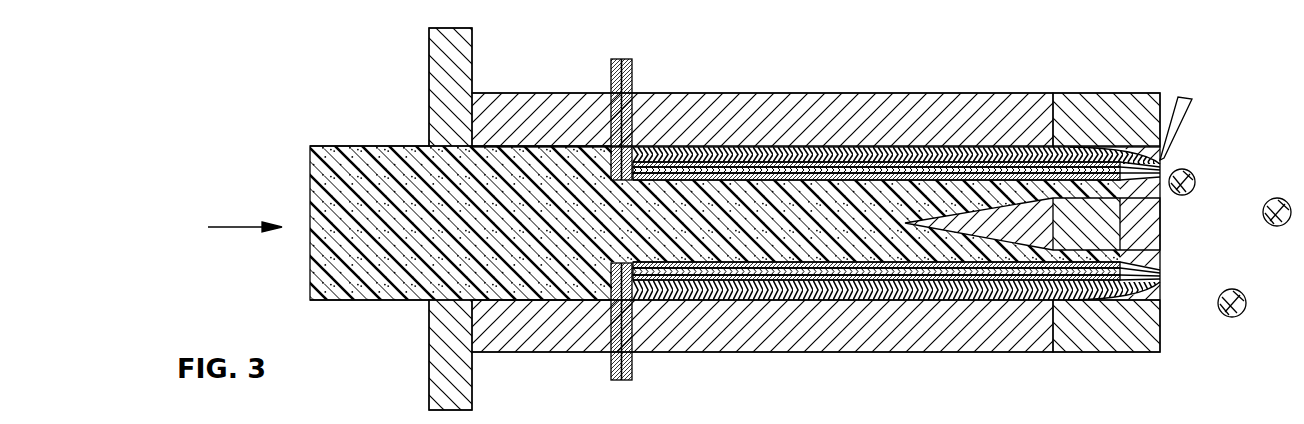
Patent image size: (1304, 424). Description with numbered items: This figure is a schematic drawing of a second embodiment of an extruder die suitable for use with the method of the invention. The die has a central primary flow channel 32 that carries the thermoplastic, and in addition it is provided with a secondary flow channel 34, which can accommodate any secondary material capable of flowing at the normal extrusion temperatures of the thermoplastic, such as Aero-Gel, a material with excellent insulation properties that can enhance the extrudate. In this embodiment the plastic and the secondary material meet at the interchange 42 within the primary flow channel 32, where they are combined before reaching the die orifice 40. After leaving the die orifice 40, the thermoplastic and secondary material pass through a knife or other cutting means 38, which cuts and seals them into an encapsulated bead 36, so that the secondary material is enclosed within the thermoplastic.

The central primary flow channel 32 is at (417, 262).
The secondary flow channel 34 is at (781, 278).
The encapsulated bead 36 is at (1195, 176).
The cutting means 38 is at (1179, 106).
The die orifice 40 is at (1160, 311).
The interchange 42 is at (1160, 260).